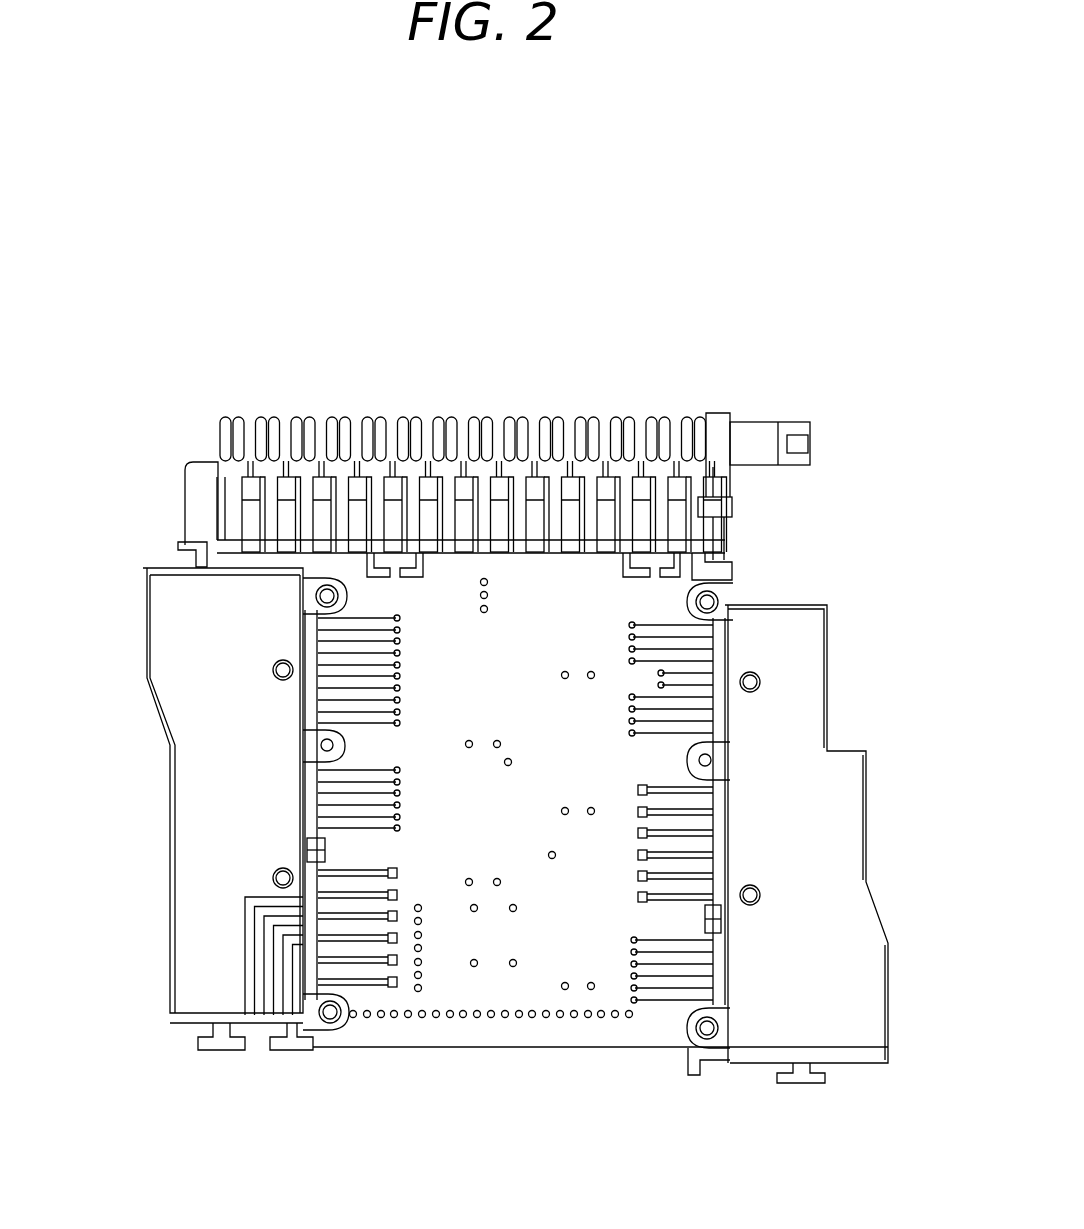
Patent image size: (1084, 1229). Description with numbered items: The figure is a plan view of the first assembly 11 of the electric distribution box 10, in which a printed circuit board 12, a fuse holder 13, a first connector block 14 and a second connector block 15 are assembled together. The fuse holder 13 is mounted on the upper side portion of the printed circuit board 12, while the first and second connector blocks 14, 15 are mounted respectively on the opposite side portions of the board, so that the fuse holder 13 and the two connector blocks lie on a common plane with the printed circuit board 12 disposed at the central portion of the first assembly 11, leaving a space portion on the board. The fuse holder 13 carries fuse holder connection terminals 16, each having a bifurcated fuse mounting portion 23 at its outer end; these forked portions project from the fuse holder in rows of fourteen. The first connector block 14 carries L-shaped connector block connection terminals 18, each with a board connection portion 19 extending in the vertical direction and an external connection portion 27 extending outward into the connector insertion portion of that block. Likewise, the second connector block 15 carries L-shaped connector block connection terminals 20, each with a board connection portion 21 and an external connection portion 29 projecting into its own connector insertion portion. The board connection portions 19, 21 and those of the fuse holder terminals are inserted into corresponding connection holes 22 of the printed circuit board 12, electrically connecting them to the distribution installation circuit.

The electric distribution box 10 is at (596, 293).
The first assembly 11 is at (722, 416).
The printed circuit board 12 is at (552, 1047).
The fuse holder 13 is at (200, 462).
The first connector block 14 is at (185, 915).
The second connector block 15 is at (850, 860).
The fuse holder connection terminal 16 is at (702, 505).
The connector block connection terminal 18 is at (367, 1045).
The board connection portion 19 is at (407, 1043).
The connector block connection terminal 20 is at (663, 1000).
The board connection portion 21 is at (627, 1000).
The connection hole 22 is at (397, 951).
The bifurcated fuse mounting portion 23 is at (690, 428).
The external connection portion 27 is at (313, 1043).
The external connection portion 29 is at (730, 1000).